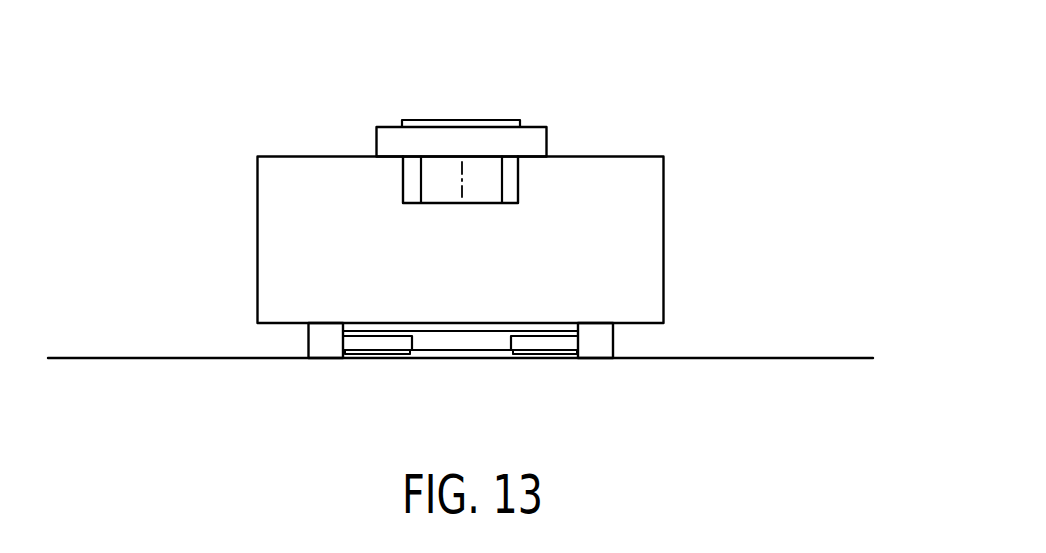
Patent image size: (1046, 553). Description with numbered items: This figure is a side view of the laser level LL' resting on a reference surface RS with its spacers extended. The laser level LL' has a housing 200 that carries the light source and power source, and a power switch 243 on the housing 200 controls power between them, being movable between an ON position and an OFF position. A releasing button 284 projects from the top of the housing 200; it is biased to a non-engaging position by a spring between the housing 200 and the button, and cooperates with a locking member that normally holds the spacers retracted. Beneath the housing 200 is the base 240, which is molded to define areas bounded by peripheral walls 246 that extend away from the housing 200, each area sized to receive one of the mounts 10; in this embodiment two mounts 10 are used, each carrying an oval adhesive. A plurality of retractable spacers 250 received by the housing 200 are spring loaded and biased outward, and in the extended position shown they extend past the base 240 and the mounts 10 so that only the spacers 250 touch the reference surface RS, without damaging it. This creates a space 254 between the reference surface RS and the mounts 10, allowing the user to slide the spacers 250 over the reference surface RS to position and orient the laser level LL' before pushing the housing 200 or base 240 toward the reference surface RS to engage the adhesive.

The mount 10 is at (362, 352).
The housing 200 is at (263, 235).
The base 240 is at (479, 329).
The power switch 243 is at (446, 193).
The peripheral wall 246 is at (383, 340).
The retractable spacer 250 is at (320, 332).
The space 254 is at (380, 352).
The releasing button 284 is at (487, 120).
The reference surface RS is at (88, 357).
The laser level LL' is at (234, 70).